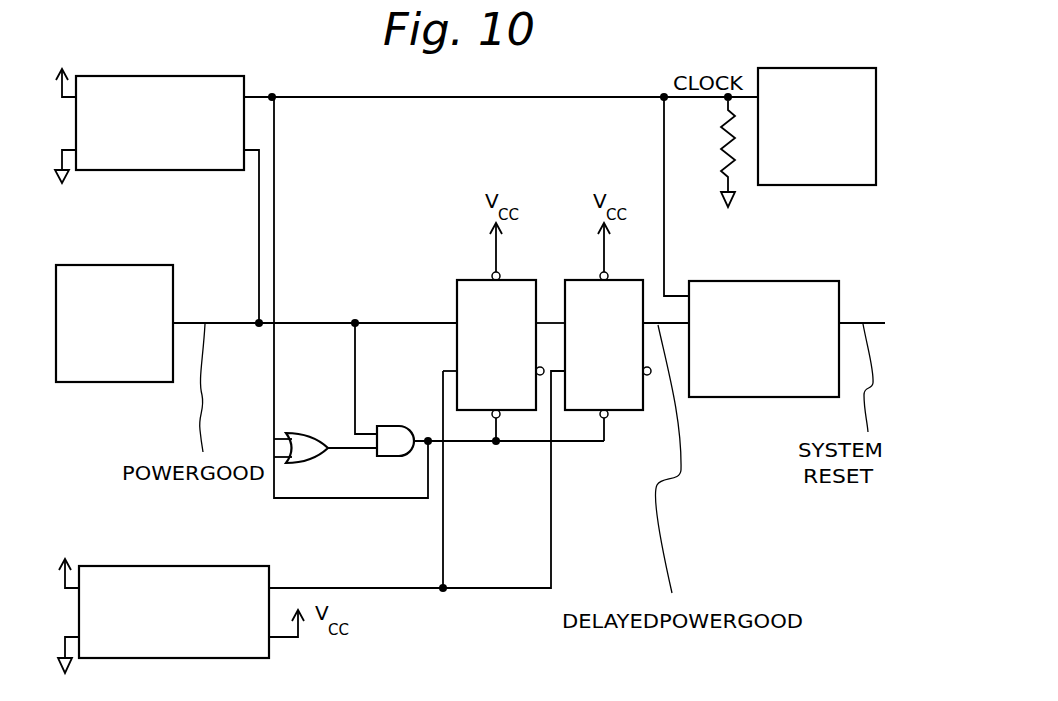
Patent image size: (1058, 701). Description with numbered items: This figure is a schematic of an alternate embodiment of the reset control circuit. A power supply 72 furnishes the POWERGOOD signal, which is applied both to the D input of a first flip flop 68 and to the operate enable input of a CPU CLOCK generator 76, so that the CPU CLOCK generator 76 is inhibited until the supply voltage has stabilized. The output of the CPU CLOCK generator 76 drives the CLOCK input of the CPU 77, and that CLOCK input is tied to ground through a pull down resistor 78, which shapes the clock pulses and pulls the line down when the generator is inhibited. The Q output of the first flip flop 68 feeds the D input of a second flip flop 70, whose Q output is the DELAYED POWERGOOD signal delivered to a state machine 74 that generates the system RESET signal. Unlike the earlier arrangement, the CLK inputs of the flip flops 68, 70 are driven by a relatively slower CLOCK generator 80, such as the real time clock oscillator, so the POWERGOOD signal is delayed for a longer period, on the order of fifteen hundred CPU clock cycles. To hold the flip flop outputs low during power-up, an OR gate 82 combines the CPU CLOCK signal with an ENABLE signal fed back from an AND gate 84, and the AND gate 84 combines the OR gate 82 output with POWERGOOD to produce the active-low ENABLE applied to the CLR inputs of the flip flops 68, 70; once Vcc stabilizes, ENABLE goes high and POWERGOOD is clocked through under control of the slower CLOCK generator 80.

The CPU CLOCK generator 76 is at (170, 76).
The CPU 77 is at (830, 67).
The pull down resistor 78 is at (723, 143).
The power supply 72 is at (137, 263).
The first flip flop 68 is at (512, 280).
The second flip flop 70 is at (620, 280).
The state machine 74 is at (818, 280).
The OR gate 82 is at (307, 432).
The AND gate 84 is at (400, 424).
The slower CLOCK generator 80 is at (173, 565).